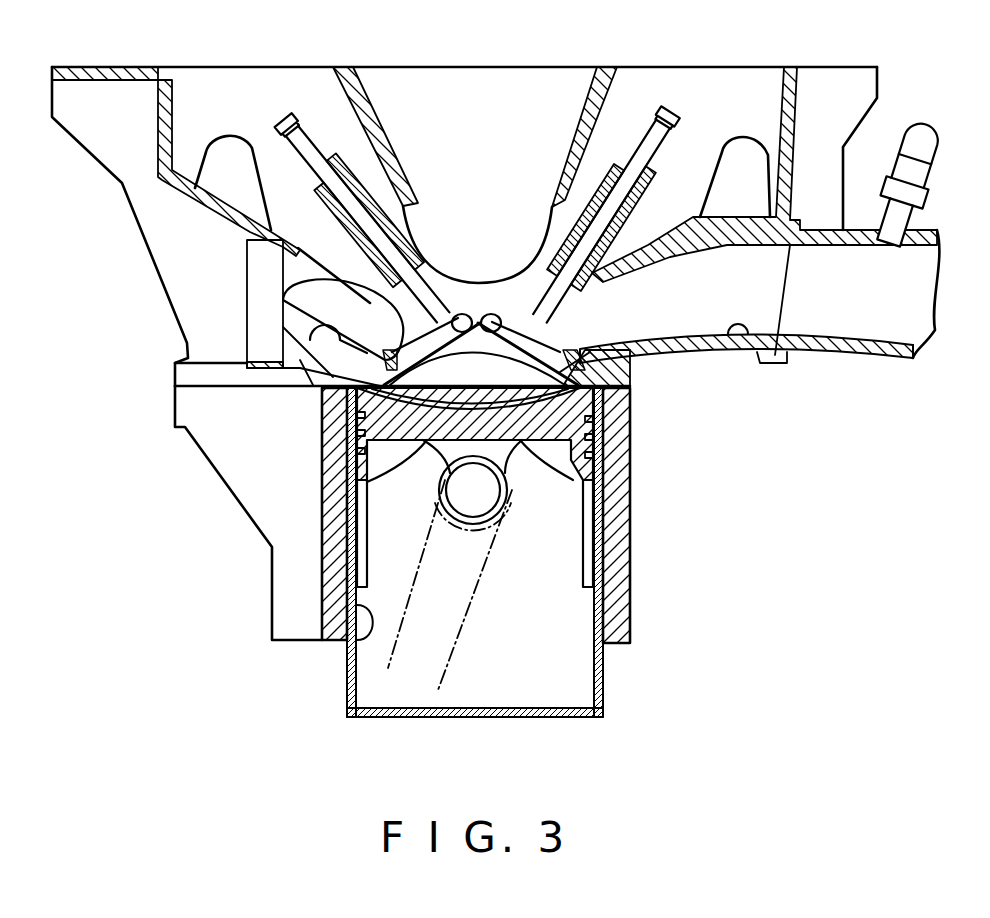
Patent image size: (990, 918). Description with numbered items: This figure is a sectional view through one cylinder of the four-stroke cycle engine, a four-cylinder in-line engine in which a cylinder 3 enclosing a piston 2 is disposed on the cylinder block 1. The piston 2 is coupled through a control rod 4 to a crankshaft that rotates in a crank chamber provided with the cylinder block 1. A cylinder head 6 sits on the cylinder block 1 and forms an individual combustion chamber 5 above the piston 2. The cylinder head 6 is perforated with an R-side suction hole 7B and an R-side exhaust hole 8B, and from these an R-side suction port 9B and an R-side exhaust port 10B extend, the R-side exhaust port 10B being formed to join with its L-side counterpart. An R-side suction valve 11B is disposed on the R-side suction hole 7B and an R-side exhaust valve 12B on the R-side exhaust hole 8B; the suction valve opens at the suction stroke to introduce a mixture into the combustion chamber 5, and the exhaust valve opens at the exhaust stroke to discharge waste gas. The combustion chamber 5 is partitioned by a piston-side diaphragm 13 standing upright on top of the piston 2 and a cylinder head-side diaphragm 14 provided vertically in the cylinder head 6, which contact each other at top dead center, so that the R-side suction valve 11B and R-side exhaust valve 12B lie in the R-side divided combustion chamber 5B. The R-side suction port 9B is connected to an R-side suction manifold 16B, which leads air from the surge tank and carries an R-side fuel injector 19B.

The cylinder block 1 is at (632, 512).
The piston 2 is at (600, 410).
The cylinder 3 is at (346, 643).
The control rod 4 is at (458, 630).
The combustion chamber 5 is at (633, 355).
The R-side divided combustion chamber 5B is at (505, 374).
The cylinder head 6 is at (560, 86).
The R-side suction hole 7B is at (510, 312).
The R-side exhaust hole 8B is at (460, 314).
The R-side suction port 9B is at (748, 334).
The R-side exhaust port 10B is at (310, 340).
The R-side suction valve 11B is at (643, 160).
The R-side exhaust valve 12B is at (297, 163).
The piston-side diaphragm 13 is at (355, 480).
The cylinder head-side diaphragm 14 is at (533, 347).
The R-side suction manifold 16B is at (876, 360).
The R-side fuel injector 19B is at (919, 148).